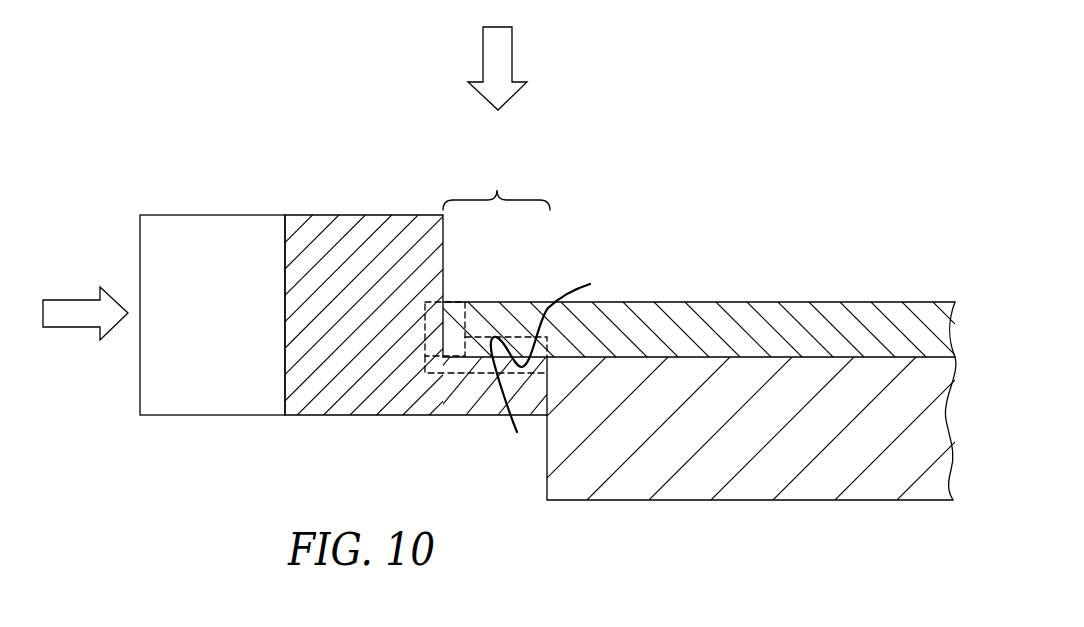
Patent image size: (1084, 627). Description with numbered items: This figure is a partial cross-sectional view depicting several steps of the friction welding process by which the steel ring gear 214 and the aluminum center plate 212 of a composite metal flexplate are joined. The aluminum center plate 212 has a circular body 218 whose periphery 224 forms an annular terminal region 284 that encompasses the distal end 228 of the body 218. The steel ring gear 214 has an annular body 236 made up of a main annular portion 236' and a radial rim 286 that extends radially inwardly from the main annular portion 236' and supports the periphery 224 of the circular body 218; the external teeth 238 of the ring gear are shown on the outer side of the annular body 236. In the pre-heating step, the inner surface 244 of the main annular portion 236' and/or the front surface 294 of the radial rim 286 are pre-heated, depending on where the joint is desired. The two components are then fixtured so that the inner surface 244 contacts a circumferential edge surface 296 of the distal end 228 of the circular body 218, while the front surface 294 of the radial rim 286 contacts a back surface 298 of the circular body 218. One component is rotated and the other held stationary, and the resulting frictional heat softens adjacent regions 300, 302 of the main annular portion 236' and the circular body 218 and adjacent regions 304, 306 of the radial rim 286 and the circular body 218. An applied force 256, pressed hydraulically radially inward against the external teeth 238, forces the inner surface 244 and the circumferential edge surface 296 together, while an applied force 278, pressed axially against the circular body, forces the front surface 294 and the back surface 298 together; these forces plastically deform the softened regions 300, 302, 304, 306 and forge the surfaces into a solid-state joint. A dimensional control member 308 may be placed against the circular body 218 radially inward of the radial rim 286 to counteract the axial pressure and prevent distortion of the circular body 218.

The aluminum center plate 212 is at (677, 230).
The steel ring gear 214 is at (257, 127).
The circular body 218 is at (782, 318).
The periphery 224 is at (543, 292).
The distal end 228 is at (484, 310).
The annular body 236 is at (416, 286).
The main annular portion 236' is at (371, 348).
The external teeth 238 is at (196, 230).
The inner surface 244 is at (445, 312).
The applied force 256 is at (62, 310).
The applied force 278 is at (503, 55).
The annular terminal region 284 is at (496, 184).
The radial rim 286 is at (478, 402).
The front surface 294 is at (515, 404).
The circumferential edge surface 296 is at (438, 352).
The back surface 298 is at (564, 315).
The softened region 300 is at (427, 318).
The softened region 302 is at (468, 307).
The softened region 304 is at (437, 373).
The softened region 306 is at (547, 337).
The dimensional control member 308 is at (712, 473).